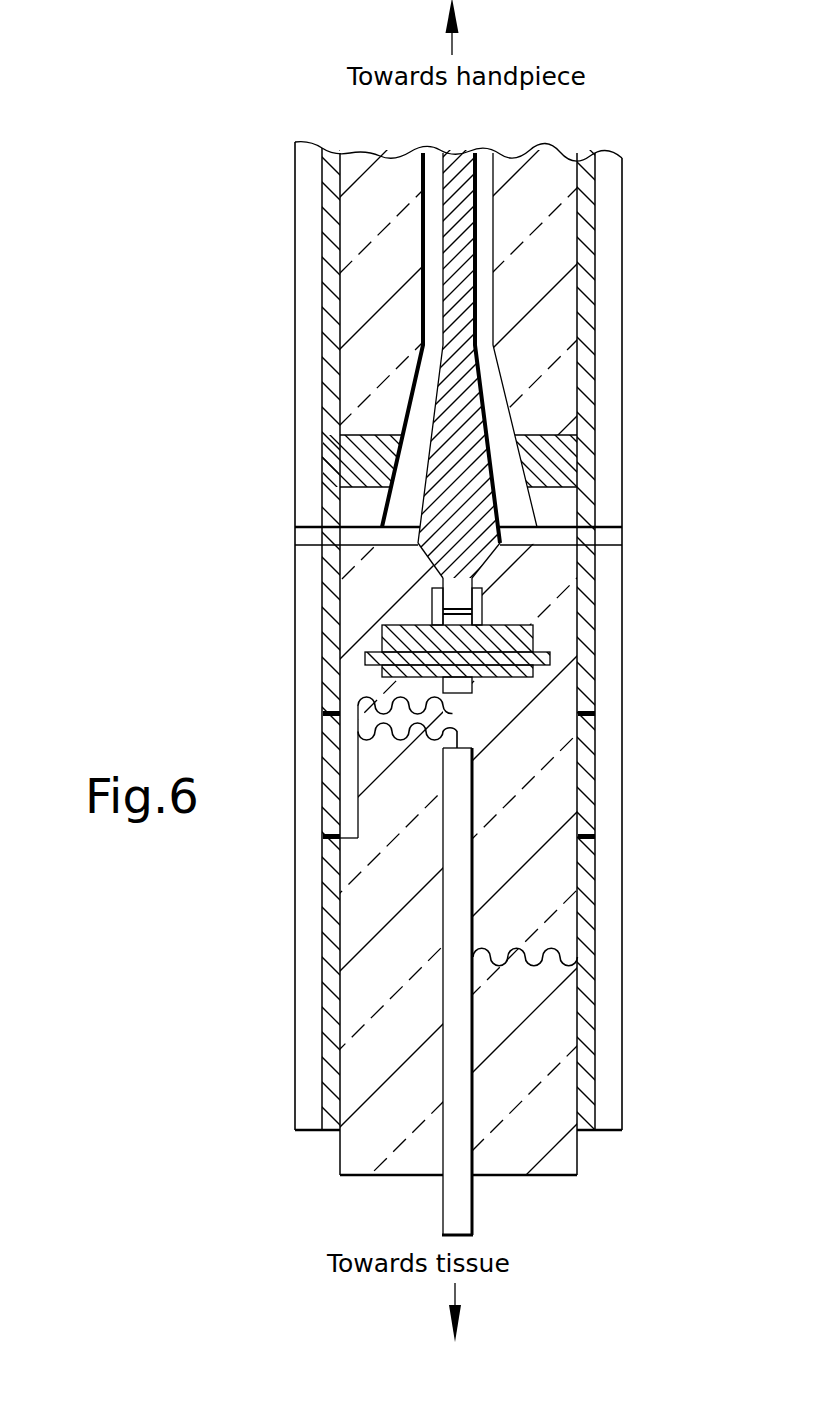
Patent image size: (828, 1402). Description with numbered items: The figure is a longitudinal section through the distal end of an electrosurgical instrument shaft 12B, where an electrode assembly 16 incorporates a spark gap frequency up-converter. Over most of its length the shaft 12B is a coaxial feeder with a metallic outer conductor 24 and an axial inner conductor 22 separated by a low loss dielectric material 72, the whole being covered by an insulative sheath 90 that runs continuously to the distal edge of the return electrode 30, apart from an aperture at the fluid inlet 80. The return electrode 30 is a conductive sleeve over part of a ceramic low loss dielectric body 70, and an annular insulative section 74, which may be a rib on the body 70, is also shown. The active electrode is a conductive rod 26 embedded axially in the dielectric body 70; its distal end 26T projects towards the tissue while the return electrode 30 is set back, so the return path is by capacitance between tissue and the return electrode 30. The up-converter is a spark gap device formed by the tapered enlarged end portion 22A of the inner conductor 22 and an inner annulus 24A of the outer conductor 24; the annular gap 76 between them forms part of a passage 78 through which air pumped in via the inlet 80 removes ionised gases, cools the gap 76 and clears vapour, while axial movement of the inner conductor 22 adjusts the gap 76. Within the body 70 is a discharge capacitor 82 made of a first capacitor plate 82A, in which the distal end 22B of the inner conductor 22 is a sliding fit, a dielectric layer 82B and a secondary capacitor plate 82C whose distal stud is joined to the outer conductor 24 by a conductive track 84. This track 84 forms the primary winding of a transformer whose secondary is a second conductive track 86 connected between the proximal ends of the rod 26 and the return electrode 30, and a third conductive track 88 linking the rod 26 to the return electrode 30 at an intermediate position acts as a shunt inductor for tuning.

The instrument shaft 12B is at (613, 217).
The insulative sheath 90 is at (303, 172).
The outer conductor 24 is at (327, 262).
The return electrode 30 is at (587, 943).
The annular insulative section 74 is at (587, 823).
The low loss dielectric material 72 is at (365, 378).
The inner conductor 22 is at (463, 292).
The passage 78 is at (492, 385).
The enlarged end portion of the inner conductor 22A is at (490, 470).
The inner annulus 24A is at (567, 470).
The fluid inlet 80 is at (292, 530).
The spark gap 76 is at (517, 520).
The distal end of the inner conductor 22B is at (460, 598).
The dielectric body 70 is at (372, 592).
The discharge capacitor 82 is at (118, 575).
The first capacitor plate 82A is at (380, 632).
The dielectric layer 82B is at (363, 660).
The secondary capacitor plate 82C is at (377, 677).
The conductive track 84 is at (377, 702).
The second conductive track 86 is at (403, 733).
The third conductive track 88 is at (510, 960).
The conductive rod 26 is at (458, 1208).
The distal end of the active electrode 26T is at (442, 1236).
The electrode assembly 16 is at (222, 953).